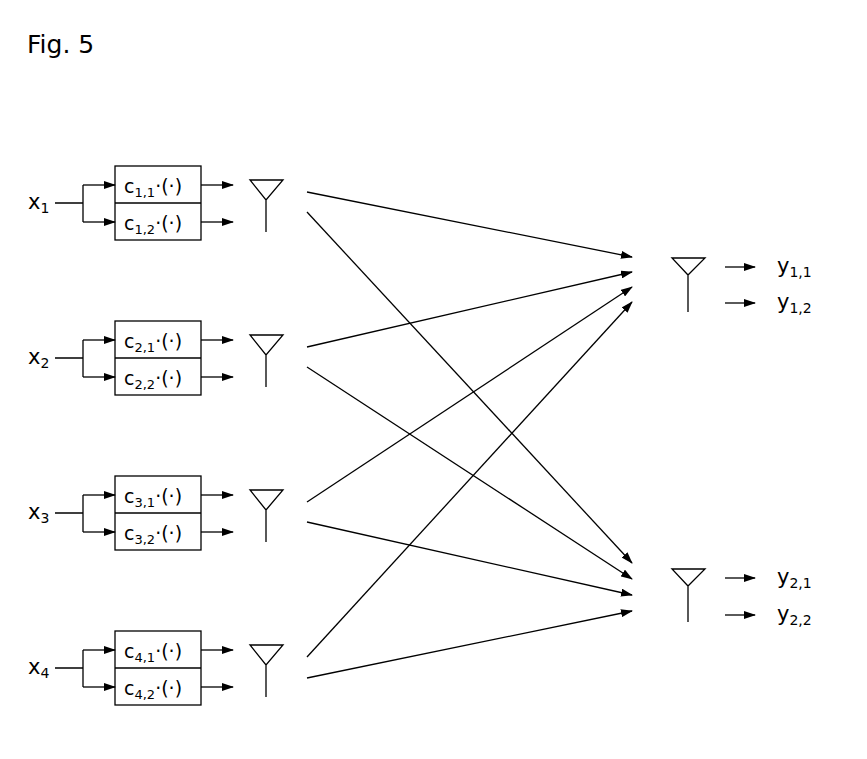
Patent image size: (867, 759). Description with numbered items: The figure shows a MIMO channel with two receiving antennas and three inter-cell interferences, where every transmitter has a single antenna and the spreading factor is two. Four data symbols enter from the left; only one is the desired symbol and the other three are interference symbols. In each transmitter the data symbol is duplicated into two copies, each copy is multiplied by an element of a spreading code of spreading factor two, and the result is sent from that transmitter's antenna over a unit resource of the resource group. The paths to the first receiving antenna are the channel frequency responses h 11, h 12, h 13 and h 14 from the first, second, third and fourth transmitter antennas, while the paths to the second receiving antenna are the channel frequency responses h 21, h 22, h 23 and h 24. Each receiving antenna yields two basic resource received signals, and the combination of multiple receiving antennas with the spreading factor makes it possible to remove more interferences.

The channel frequency response h11 11 is at (469, 215).
The channel frequency response h21 21 is at (469, 387).
The channel frequency response h12 12 is at (469, 309).
The channel frequency response h22 22 is at (469, 473).
The channel frequency response h13 13 is at (469, 394).
The channel frequency response h23 23 is at (469, 553).
The channel frequency response h14 14 is at (469, 479).
The channel frequency response h24 24 is at (469, 644).